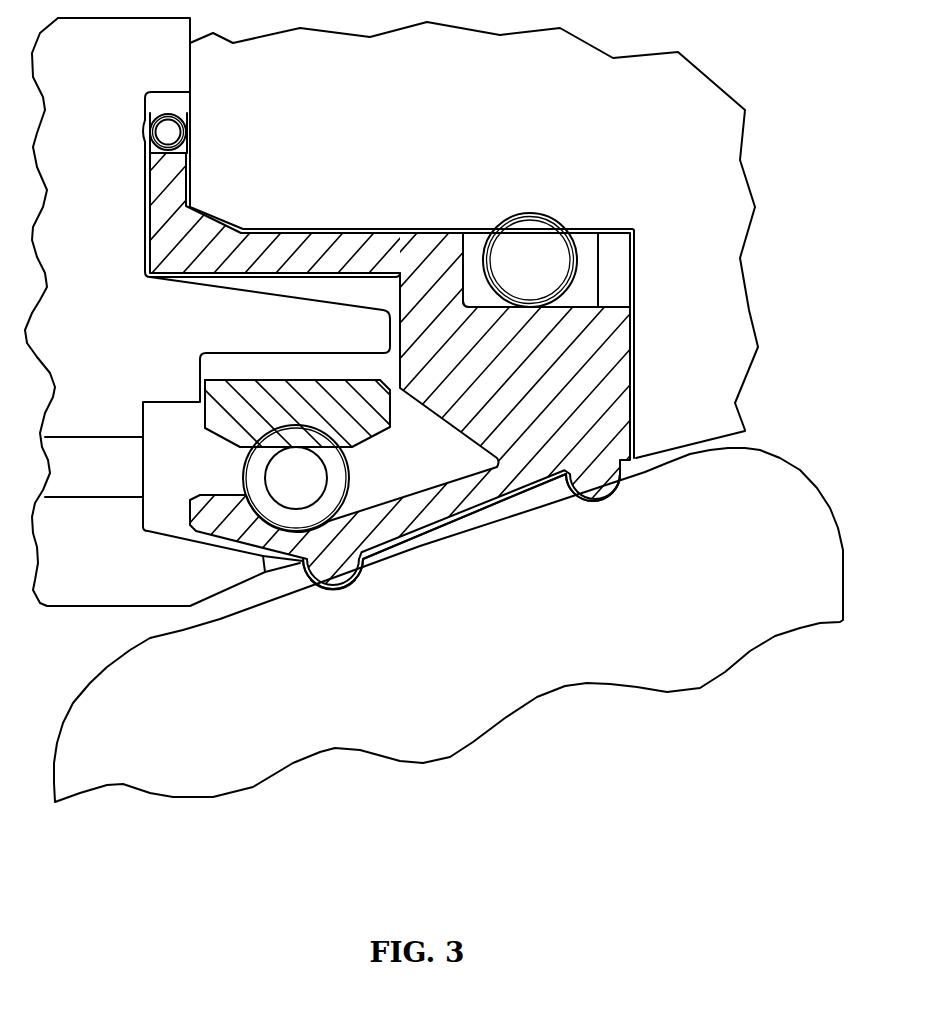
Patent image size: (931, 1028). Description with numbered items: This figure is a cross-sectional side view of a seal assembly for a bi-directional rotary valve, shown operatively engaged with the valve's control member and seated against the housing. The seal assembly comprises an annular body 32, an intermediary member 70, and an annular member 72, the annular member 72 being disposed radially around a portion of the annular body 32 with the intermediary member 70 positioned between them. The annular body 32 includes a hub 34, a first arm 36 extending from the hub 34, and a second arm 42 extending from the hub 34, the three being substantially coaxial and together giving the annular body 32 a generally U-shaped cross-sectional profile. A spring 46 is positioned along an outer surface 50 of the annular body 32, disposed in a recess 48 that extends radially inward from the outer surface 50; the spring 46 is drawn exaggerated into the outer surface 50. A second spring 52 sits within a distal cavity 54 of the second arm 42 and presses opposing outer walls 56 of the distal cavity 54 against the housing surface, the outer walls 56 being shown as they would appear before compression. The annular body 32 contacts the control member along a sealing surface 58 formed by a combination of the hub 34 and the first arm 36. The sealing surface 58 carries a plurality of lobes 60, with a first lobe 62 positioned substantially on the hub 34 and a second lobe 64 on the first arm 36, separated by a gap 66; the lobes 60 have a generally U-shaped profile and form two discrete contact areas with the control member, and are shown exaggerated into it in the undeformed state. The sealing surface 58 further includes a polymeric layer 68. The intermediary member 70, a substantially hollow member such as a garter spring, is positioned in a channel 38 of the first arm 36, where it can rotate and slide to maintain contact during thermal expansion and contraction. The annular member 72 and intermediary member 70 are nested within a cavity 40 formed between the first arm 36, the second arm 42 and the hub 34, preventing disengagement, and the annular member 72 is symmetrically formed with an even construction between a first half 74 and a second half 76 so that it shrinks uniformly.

The annular body 32 is at (647, 293).
The hub 34 is at (636, 352).
The first arm 36 is at (223, 547).
The channel 38 is at (262, 557).
The cavity 40 is at (210, 455).
The second arm 42 is at (314, 231).
The spring 46 is at (551, 217).
The recess 48 is at (474, 243).
The outer surface 50 is at (396, 230).
The second spring 52 is at (174, 110).
The distal cavity 54 is at (167, 108).
The outer walls 56 is at (196, 133).
The sealing surface 58 is at (659, 551).
The lobes 60 is at (337, 591).
The first lobe 62 is at (607, 499).
The second lobe 64 is at (320, 587).
The gap 66 is at (567, 503).
The polymeric layer 68 is at (618, 483).
The intermediary member 70 is at (351, 486).
The annular member 72 is at (384, 429).
The first half 74 is at (219, 380).
The second half 76 is at (353, 380).